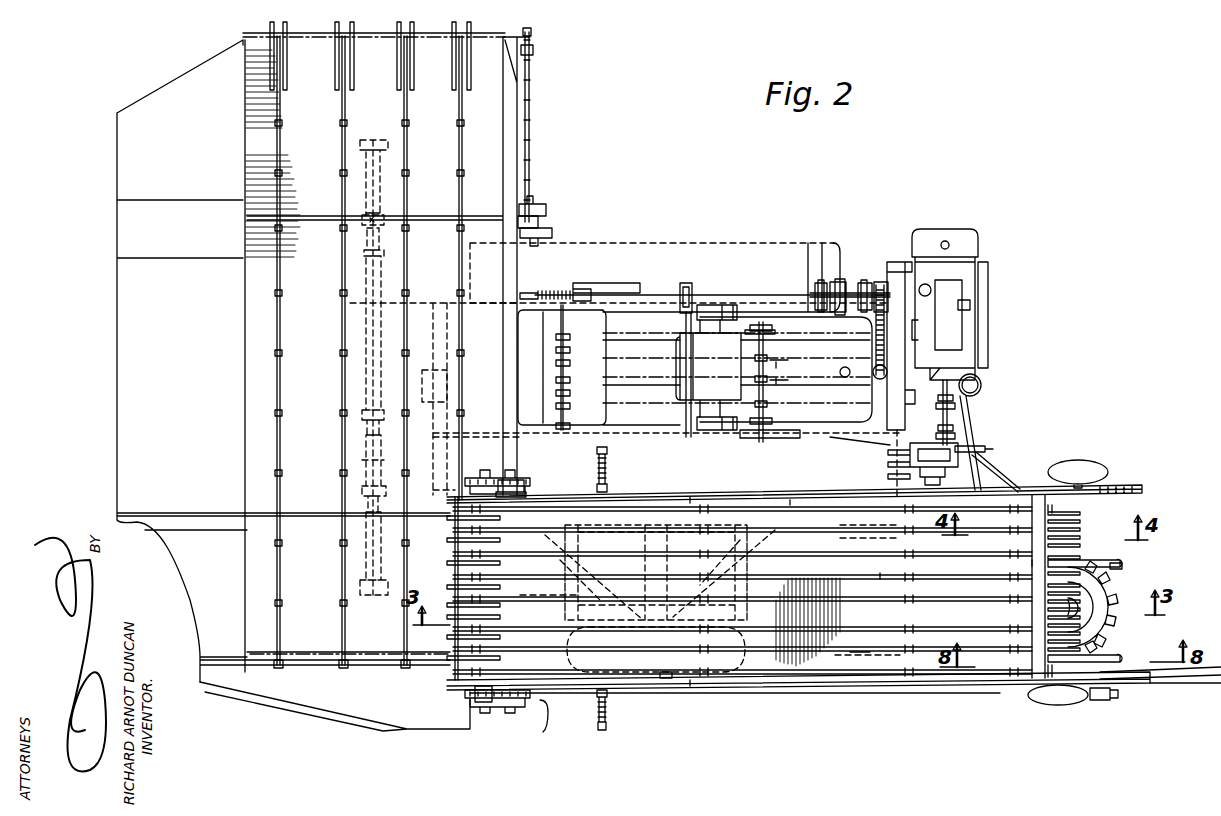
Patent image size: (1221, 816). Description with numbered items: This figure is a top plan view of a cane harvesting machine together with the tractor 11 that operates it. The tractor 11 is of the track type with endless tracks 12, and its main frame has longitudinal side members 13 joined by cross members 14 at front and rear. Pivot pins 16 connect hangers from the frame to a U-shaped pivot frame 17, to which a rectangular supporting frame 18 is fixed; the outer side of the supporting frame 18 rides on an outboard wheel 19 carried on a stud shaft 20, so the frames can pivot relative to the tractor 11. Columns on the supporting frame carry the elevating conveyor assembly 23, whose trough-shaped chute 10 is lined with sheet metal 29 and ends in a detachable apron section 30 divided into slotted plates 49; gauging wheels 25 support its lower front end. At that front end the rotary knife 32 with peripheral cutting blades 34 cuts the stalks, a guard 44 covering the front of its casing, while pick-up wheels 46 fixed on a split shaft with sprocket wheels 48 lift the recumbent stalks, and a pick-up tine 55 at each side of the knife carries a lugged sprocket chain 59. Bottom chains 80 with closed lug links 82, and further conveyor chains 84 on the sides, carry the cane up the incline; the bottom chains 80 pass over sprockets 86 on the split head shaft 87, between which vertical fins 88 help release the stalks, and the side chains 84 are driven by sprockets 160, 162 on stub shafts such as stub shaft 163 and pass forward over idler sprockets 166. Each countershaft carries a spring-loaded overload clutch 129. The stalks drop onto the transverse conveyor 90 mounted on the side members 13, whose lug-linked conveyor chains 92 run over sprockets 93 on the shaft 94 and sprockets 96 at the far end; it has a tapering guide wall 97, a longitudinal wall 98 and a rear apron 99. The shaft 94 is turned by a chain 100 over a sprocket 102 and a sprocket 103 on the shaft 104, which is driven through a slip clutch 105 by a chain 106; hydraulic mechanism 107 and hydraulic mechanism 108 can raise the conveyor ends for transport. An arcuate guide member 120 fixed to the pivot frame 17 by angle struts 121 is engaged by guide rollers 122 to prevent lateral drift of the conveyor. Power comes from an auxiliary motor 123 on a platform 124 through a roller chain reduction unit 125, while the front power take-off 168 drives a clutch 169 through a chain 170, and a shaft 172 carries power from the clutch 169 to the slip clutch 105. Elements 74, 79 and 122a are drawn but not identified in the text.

The chute 10 is at (862, 658).
The tractor 11 is at (765, 330).
The endless tracks 12 is at (662, 246).
The longitudinal side members 13 is at (736, 305).
The cross members 14 is at (892, 407).
The pivot pins 16 is at (426, 385).
The pivot frame 17 is at (436, 478).
The supporting frame 18 is at (565, 588).
The outboard wheel 19 is at (742, 668).
The stud shaft 20 is at (660, 673).
The elevating conveyor assembly 23 is at (805, 692).
The gauging wheels 25 is at (1085, 462).
The sheet metal 29 is at (842, 662).
The apron section 30 is at (1032, 565).
The knife 32 is at (1110, 600).
The cutting blades 34 is at (1108, 615).
The guard 44 is at (1060, 612).
The pick-up wheels 46 is at (1080, 521).
The sprocket wheels 48 is at (1080, 553).
The plates 49 is at (1040, 505).
The pick-up tine 55 is at (1120, 560).
The sprocket chain 59 is at (1118, 569).
The base plate 74 is at (992, 687).
The extension 79 is at (1208, 682).
The bottom chains 80 is at (785, 505).
The closed lug links 82 is at (880, 575).
The conveyor chains 84 is at (695, 497).
The sprockets 86 is at (450, 575).
The split head shaft 87 is at (475, 690).
The vertical fins 88 is at (445, 536).
The transverse conveyor 90 is at (500, 119).
The lug-linked conveyor chains 92 is at (341, 132).
The sprockets 93 is at (334, 52).
The shaft 94 is at (534, 50).
The sprockets 96 is at (405, 668).
The tapering guide wall 97 is at (458, 730).
The longitudinal wall 98 is at (518, 455).
The apron 99 is at (130, 152).
The chain 100 is at (531, 78).
The sprocket 102 is at (531, 32).
The sprocket 103 is at (540, 226).
The shaft 104 is at (546, 208).
The slip clutch 105 is at (540, 292).
The chain 106 is at (552, 238).
The hydraulic mechanism 107 is at (383, 272).
The hydraulic mechanism 108 is at (362, 465).
The arcuate guide member 120 is at (988, 447).
The angle struts 121 is at (972, 412).
The guide rollers 122 is at (957, 433).
The link 122a is at (988, 465).
The auxiliary motor 123 is at (968, 295).
The platform 124 is at (990, 320).
The roller chain reduction unit 125 is at (915, 458).
The spring-loaded overload clutch 129 is at (608, 465).
The sprocket 160 is at (522, 707).
The sprocket 162 is at (532, 484).
The stub shaft 163 is at (543, 700).
The idler sprockets 166 is at (1143, 487).
The front power take-off 168 is at (874, 376).
The clutch 169 is at (845, 282).
The chain 170 is at (874, 328).
The shaft 172 is at (693, 287).